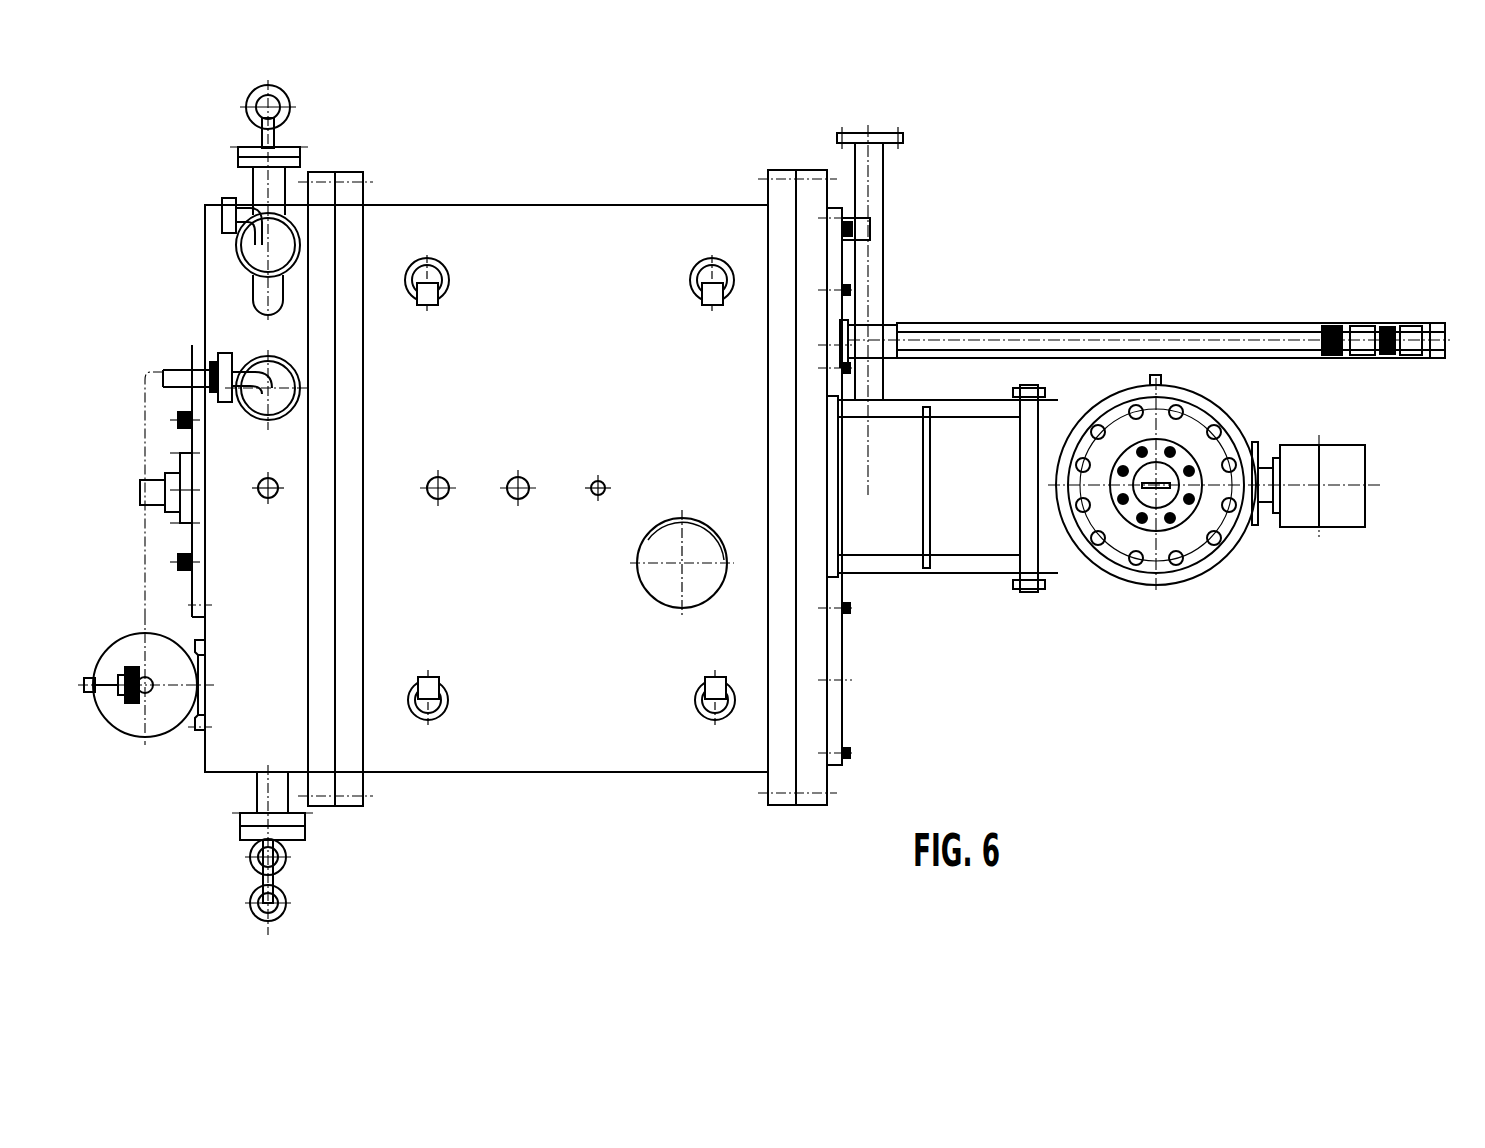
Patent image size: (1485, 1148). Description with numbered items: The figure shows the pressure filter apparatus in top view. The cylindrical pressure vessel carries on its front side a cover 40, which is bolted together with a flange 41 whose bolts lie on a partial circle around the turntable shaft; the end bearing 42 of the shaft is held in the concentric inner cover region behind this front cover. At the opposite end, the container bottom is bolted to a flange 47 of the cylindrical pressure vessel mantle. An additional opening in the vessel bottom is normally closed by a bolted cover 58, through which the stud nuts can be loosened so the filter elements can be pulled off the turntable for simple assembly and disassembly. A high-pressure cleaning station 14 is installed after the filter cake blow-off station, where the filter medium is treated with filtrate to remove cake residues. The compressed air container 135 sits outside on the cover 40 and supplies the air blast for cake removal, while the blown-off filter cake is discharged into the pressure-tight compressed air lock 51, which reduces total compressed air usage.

The high-pressure cleaning station 14 is at (912, 270).
The cover 40 is at (205, 252).
The flange 41 is at (350, 172).
The end bearing 42 is at (197, 588).
The flange 47 is at (778, 176).
The compressed air lock 51 is at (1165, 598).
The bolted cover 58 is at (833, 655).
The compressed air container 135 is at (125, 714).